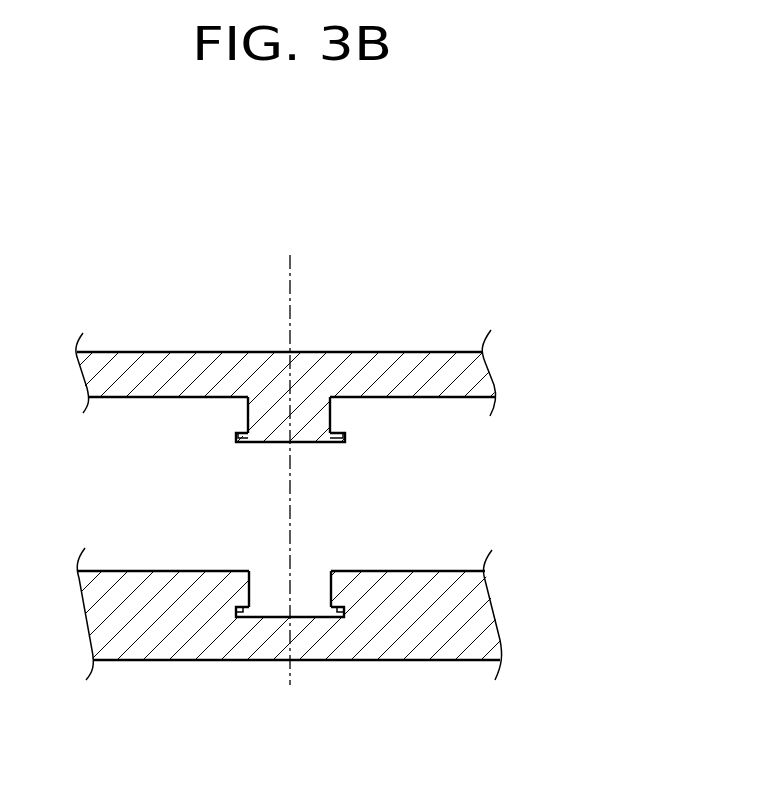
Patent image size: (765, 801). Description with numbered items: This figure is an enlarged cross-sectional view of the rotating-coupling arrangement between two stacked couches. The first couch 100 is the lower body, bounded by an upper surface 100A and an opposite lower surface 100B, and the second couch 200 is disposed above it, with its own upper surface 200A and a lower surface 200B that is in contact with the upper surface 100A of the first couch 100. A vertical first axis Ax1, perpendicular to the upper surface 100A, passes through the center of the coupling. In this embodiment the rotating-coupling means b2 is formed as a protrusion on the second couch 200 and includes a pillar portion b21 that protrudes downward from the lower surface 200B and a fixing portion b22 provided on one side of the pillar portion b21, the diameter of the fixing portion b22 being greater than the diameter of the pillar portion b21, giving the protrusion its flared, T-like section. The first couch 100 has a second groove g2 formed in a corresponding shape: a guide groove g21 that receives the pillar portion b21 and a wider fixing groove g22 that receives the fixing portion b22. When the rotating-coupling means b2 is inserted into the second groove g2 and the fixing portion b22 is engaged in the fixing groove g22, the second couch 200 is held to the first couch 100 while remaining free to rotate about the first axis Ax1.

The first axis Ax1 is at (290, 272).
The second couch 200 is at (347, 385).
The upper surface of the second couch 200A is at (456, 351).
The lower surface of the second couch 200B is at (463, 398).
The rotating-coupling means b2 is at (293, 442).
The pillar portion b21 is at (255, 412).
The fixing portion b22 is at (236, 437).
The first couch 100 is at (347, 618).
The upper surface of the first couch 100A is at (455, 570).
The lower surface of the first couch 100B is at (457, 661).
The second groove g2 is at (272, 609).
The guide groove g21 is at (250, 582).
The fixing groove g22 is at (238, 619).